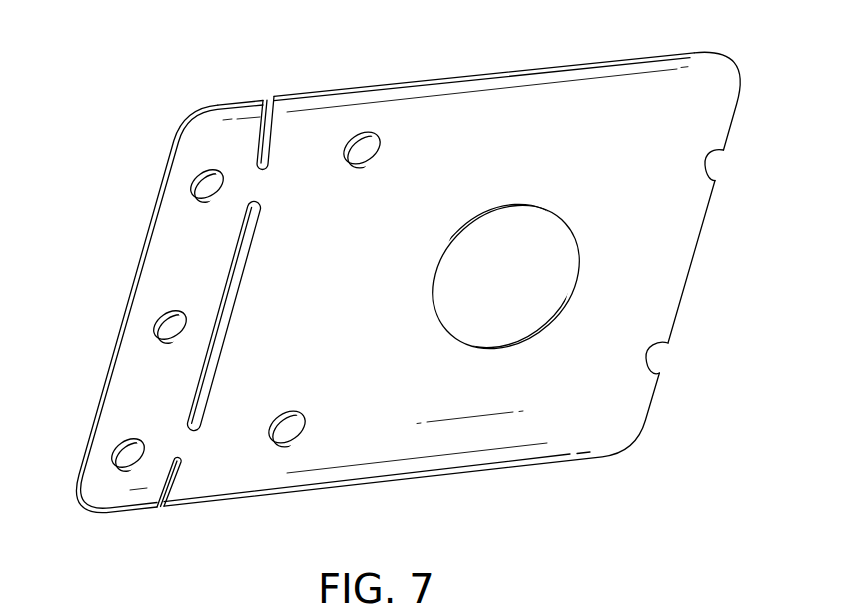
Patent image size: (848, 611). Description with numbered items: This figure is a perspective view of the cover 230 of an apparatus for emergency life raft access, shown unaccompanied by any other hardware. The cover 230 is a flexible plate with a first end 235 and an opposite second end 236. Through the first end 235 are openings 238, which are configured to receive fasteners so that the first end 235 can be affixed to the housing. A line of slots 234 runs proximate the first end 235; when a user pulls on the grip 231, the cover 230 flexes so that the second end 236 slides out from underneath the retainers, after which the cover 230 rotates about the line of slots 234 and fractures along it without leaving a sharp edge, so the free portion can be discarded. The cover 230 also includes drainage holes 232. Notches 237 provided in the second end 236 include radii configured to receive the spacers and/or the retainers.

The cover 230 is at (136, 84).
The grip 231 is at (562, 294).
The drainage holes 232 is at (382, 141).
The slots 234 is at (284, 163).
The first end 235 is at (217, 137).
The second end 236 is at (740, 105).
The notches 237 is at (712, 167).
The openings 238 is at (193, 190).